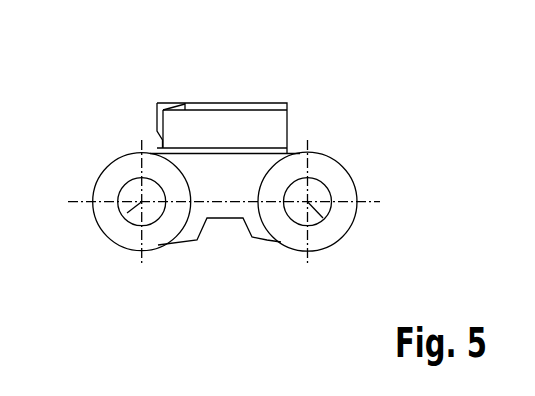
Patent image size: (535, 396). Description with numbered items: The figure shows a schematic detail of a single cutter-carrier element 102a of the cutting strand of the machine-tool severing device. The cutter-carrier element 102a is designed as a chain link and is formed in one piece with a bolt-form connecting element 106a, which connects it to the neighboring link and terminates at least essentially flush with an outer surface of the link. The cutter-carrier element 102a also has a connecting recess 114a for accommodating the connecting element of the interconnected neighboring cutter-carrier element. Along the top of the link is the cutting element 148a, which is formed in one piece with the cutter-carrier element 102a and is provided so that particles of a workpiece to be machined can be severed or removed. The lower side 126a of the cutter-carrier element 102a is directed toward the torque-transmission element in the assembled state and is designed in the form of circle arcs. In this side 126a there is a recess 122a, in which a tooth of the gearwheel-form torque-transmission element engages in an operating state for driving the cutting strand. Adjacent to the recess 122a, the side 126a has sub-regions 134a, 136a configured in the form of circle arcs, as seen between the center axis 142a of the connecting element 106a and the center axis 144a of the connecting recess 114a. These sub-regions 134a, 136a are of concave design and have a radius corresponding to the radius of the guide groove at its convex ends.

The cutter-carrier element 102a is at (320, 156).
The cutting element 148a is at (249, 105).
The center axis of the connecting element 142a is at (121, 216).
The center axis of the connecting recess 144a is at (330, 219).
The connecting recess 114a is at (330, 188).
The connecting element 106a is at (153, 212).
The side of the cutter-carrier element 126a is at (222, 254).
The sub-region 134a is at (182, 252).
The recess 122a is at (251, 238).
The sub-region 136a is at (277, 254).